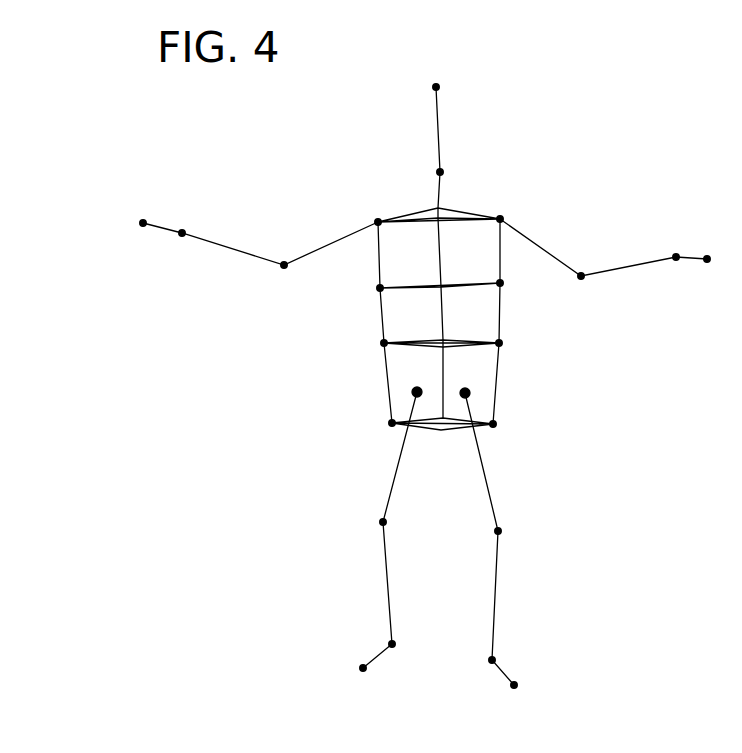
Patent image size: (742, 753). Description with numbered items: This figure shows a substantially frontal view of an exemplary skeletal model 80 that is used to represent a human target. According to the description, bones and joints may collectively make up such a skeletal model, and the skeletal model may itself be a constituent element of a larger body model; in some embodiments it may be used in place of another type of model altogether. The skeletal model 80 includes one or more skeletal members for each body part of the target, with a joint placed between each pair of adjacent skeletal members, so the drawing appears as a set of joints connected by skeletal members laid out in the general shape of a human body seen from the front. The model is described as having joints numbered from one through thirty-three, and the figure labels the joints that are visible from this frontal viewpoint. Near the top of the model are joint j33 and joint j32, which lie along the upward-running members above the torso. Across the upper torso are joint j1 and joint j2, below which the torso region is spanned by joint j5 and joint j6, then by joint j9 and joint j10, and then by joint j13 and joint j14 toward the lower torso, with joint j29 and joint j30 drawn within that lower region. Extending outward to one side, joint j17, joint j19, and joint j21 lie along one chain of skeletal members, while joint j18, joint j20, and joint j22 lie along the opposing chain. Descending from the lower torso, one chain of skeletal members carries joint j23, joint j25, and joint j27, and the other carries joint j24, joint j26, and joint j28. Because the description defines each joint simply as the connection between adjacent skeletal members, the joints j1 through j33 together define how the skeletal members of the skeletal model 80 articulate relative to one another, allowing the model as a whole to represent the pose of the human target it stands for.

The skeletal model 80 is at (574, 90).
The joint j1 is at (373, 220).
The joint j2 is at (506, 218).
The joint j5 is at (374, 287).
The joint j6 is at (506, 282).
The joint j9 is at (378, 342).
The joint j10 is at (506, 342).
The joint j13 is at (386, 422).
The joint j14 is at (500, 423).
The joint j17 is at (280, 269).
The joint j18 is at (585, 281).
The joint j19 is at (183, 228).
The joint j20 is at (675, 252).
The joint j21 is at (144, 218).
The joint j22 is at (708, 265).
The joint j23 is at (378, 521).
The joint j24 is at (504, 530).
The joint j25 is at (388, 642).
The joint j26 is at (489, 665).
The joint j27 is at (359, 666).
The joint j28 is at (520, 684).
The joint j29 is at (424, 384).
The joint j30 is at (458, 384).
The joint j32 is at (447, 170).
The joint j33 is at (442, 82).